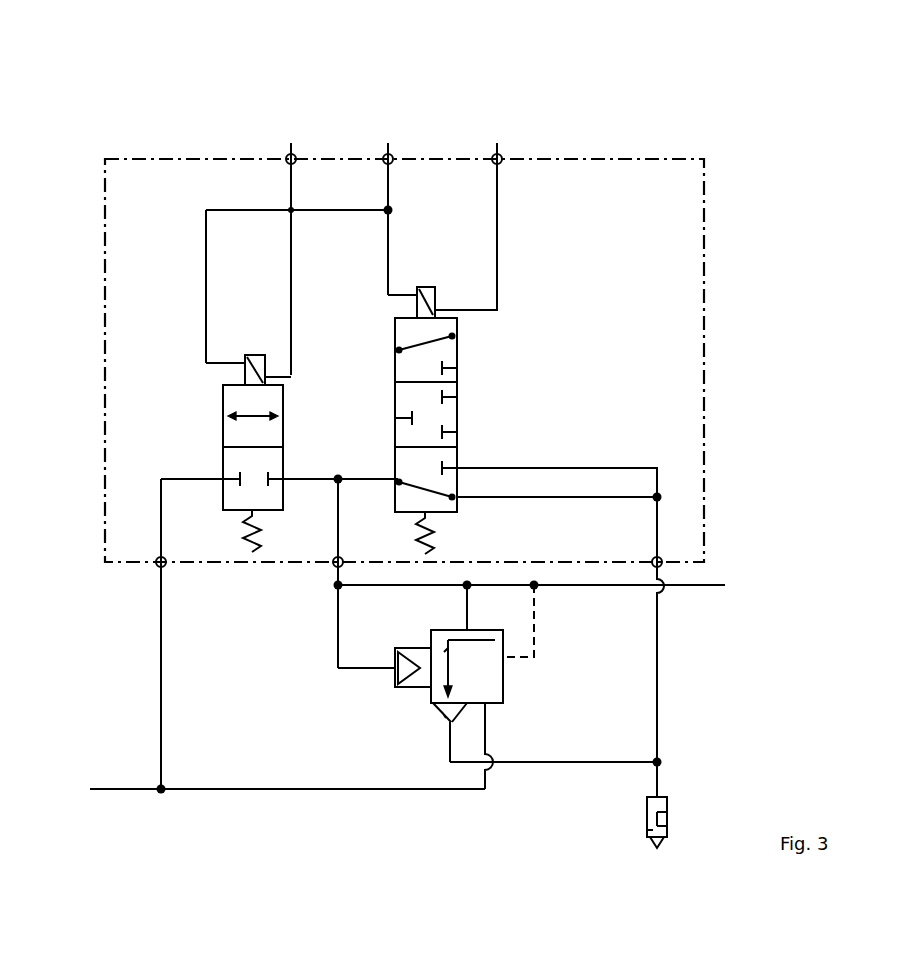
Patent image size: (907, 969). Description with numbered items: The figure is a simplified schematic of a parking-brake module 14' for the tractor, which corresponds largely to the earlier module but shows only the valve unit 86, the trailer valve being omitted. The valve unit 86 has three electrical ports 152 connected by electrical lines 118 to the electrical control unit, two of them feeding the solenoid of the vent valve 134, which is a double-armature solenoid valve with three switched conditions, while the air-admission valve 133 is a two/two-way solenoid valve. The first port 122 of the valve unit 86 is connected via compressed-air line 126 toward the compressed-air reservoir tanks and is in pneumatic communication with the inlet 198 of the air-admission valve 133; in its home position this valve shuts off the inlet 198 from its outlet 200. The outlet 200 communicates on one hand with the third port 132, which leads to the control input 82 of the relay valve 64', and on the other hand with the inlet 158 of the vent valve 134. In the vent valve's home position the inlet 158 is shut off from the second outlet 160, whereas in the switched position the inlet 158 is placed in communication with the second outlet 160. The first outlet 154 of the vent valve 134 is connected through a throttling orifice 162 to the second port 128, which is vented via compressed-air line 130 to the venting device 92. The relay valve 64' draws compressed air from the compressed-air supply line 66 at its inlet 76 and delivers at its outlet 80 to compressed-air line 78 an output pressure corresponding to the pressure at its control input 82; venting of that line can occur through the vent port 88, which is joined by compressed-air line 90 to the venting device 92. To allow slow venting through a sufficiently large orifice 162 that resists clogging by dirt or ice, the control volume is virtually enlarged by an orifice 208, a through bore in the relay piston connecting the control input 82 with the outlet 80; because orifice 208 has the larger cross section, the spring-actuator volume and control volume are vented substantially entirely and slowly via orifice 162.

The parking-brake module 14' is at (671, 86).
The valve unit 86 is at (661, 159).
The electrical ports 152 is at (296, 157).
The electrical lines 118 is at (388, 258).
The vent valve 134 is at (437, 316).
The air-admission valve 133 is at (266, 380).
The inlet 198 is at (223, 478).
The outlet 200 is at (284, 478).
The inlet 158 is at (399, 482).
The second outlet 160 is at (462, 466).
The orifice 162 is at (468, 497).
The first outlet 154 is at (456, 499).
The first port 122 is at (156, 564).
The compressed-air line 126 is at (161, 688).
The third port 132 is at (333, 564).
The second port 128 is at (662, 564).
The compressed-air line 78 is at (565, 587).
The orifice 208 is at (418, 590).
The control input 82 is at (394, 672).
The relay valve 64' is at (455, 651).
The outlet 80 is at (467, 622).
The vent port 88 is at (447, 716).
The inlet 76 is at (487, 712).
The compressed-air line 90 is at (538, 764).
The compressed-air line 130 is at (657, 670).
The compressed-air supply line 66 is at (408, 791).
The venting device 92 is at (668, 812).